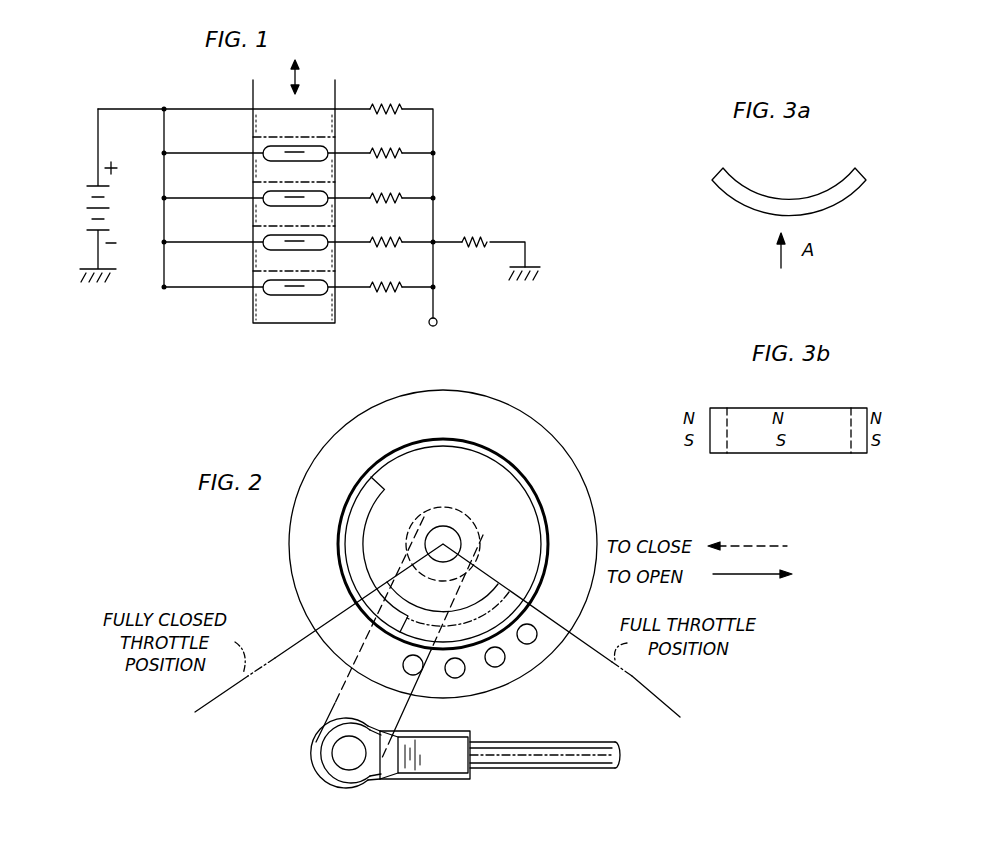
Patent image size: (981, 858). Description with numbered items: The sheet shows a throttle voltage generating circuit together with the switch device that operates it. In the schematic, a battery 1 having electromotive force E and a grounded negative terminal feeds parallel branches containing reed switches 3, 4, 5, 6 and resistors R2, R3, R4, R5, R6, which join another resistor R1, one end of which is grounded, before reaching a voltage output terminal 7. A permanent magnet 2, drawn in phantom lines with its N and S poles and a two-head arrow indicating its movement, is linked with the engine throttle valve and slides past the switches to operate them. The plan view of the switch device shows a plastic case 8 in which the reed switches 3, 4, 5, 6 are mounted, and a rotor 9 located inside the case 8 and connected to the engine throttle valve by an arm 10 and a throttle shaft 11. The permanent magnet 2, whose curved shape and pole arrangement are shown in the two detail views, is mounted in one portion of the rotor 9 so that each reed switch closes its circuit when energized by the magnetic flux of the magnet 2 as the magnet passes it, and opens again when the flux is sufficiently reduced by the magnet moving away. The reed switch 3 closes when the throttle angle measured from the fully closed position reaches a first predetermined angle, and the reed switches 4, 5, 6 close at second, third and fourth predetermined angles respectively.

In FIG. 1, the battery 1 is at (78, 206).
In FIG. 1, the permanent magnet 2 is at (336, 93).
In FIG. 2, the permanent magnet 2 is at (357, 524).
In FIG. 1, the reed switch 3 is at (329, 150).
In FIG. 2, the reed switch 3 is at (404, 660).
In FIG. 1, the reed switch 4 is at (329, 195).
In FIG. 2, the reed switch 4 is at (446, 674).
In FIG. 1, the reed switch 5 is at (329, 239).
In FIG. 2, the reed switch 5 is at (488, 665).
In FIG. 1, the reed switch 6 is at (329, 284).
In FIG. 2, the reed switch 6 is at (520, 644).
In FIG. 1, the voltage output terminal 7 is at (437, 318).
In FIG. 2, the case 8 is at (520, 414).
In FIG. 2, the rotor 9 is at (478, 498).
In FIG. 2, the arm 10 is at (343, 703).
In FIG. 2, the throttle shaft 11 is at (535, 771).
In FIG. 1, the resistor R1 is at (474, 230).
In FIG. 1, the resistor R2 is at (386, 97).
In FIG. 1, the resistor R3 is at (386, 141).
In FIG. 1, the resistor R4 is at (386, 186).
In FIG. 1, the resistor R5 is at (386, 230).
In FIG. 1, the resistor R6 is at (386, 275).